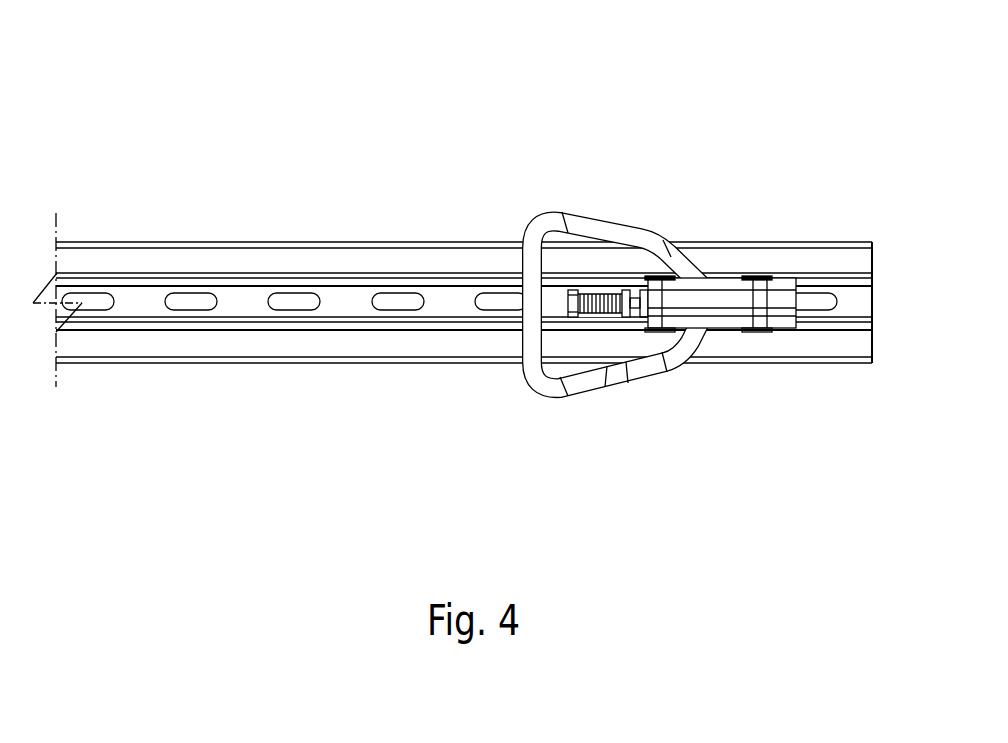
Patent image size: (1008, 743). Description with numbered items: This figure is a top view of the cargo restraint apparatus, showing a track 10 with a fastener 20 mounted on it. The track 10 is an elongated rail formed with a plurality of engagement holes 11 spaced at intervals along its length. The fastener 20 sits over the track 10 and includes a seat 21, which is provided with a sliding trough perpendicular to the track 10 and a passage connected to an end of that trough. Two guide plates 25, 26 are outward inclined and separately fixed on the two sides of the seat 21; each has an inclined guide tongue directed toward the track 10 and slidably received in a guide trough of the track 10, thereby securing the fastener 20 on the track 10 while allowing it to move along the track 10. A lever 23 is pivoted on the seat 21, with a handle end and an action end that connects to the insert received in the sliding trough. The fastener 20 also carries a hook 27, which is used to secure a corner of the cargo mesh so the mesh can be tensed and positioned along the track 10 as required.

The track 10 is at (130, 345).
The engagement holes 11 is at (205, 302).
The fastener 20 is at (690, 248).
The seat 21 is at (710, 303).
The lever 23 is at (610, 290).
The guide plate 25 is at (735, 283).
The guide plate 26 is at (738, 325).
The hook 27 is at (544, 230).